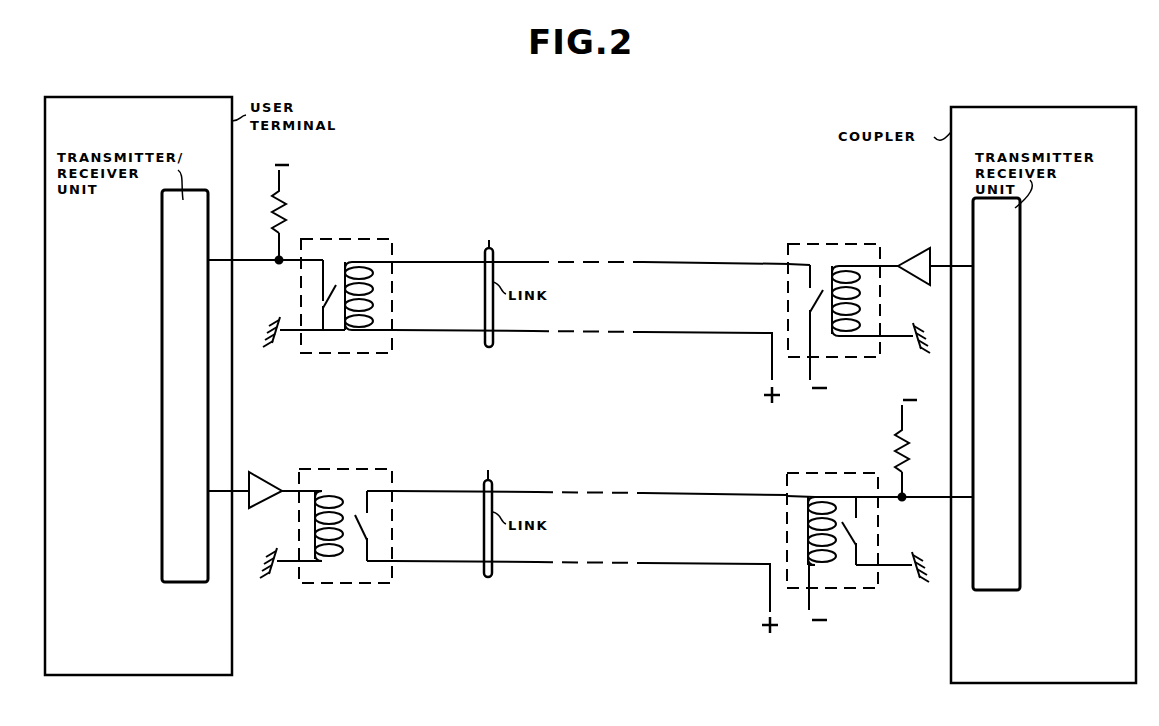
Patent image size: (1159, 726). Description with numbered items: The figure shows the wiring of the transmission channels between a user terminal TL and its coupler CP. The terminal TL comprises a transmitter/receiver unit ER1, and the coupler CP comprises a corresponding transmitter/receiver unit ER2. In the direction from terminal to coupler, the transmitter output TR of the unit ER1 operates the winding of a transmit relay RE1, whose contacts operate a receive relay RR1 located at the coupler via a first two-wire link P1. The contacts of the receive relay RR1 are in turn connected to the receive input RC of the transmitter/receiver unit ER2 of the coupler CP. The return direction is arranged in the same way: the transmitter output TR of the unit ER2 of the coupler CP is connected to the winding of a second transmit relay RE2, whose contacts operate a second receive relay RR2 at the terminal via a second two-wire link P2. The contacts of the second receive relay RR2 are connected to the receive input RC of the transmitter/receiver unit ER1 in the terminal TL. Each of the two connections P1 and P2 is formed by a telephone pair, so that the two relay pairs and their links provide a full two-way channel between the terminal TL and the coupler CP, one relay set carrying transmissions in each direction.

The terminal TL is at (133, 102).
The coupler CP is at (986, 112).
The transmitter/receiver unit ER1 is at (168, 364).
The transmitter/receiver unit ER2 is at (1007, 380).
The second receive relay RR2 is at (334, 246).
The transmit relay RE1 is at (332, 476).
The second transmit relay RE2 is at (820, 250).
The receive relay RR1 is at (820, 479).
The first two-wire link P1 is at (488, 512).
The second two-wire link P2 is at (488, 282).